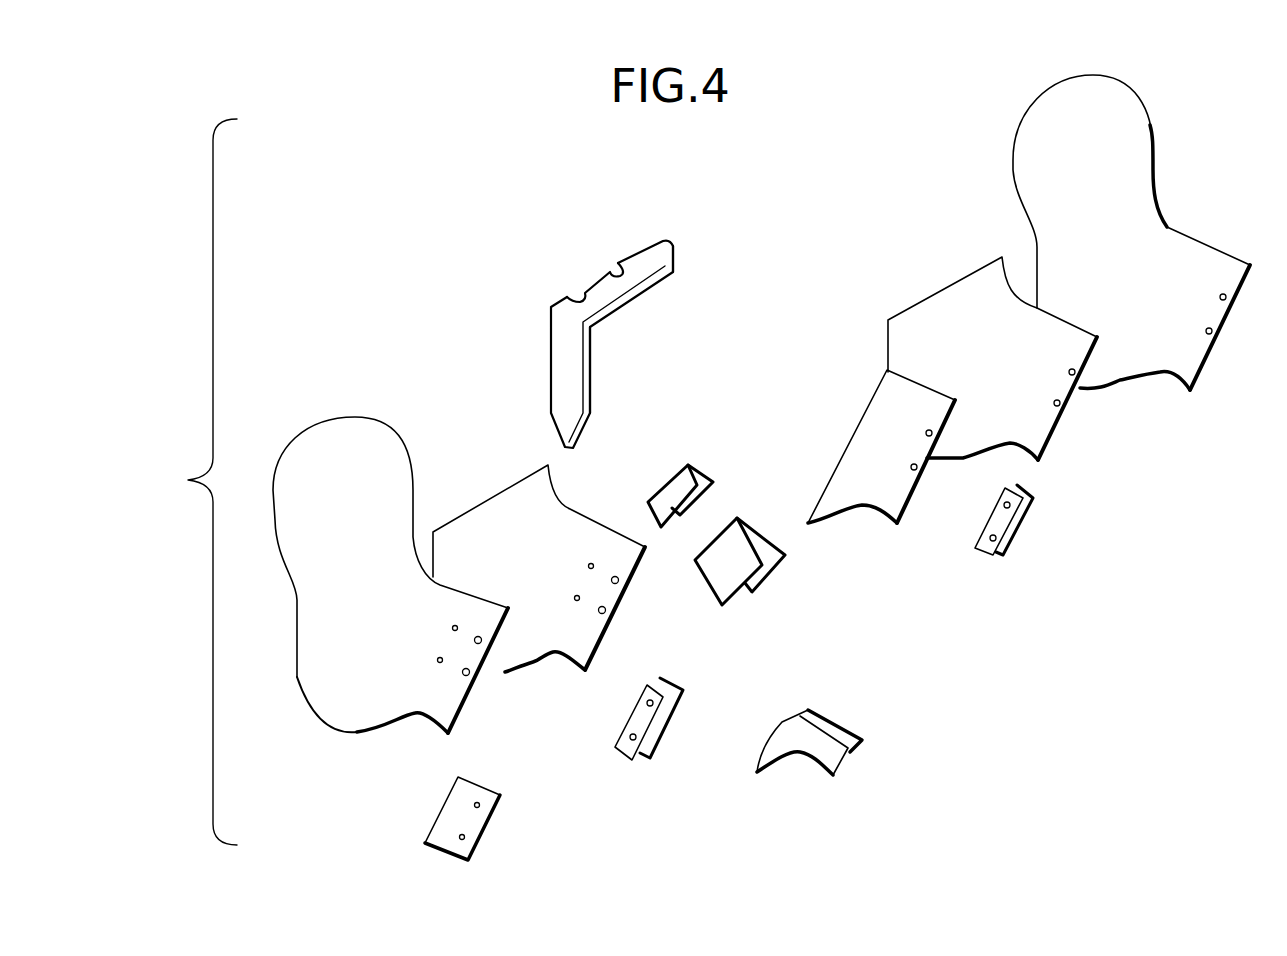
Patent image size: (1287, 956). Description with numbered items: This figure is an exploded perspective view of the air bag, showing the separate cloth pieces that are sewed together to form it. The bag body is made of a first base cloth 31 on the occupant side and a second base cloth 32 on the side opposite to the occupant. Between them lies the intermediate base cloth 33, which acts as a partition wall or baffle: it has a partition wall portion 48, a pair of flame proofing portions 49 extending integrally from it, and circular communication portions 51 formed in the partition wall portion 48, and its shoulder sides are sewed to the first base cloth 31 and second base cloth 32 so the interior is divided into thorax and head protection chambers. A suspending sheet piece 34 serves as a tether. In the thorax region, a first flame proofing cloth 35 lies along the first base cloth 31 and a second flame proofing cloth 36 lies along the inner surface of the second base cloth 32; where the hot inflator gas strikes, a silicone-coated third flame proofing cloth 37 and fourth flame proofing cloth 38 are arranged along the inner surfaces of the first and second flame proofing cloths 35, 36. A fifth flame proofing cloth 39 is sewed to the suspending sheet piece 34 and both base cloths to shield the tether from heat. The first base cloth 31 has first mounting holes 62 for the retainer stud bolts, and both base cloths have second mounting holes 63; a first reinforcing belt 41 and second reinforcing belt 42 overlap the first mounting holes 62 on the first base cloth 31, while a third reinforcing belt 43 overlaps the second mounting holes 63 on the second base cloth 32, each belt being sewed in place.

The first base cloth 31 is at (374, 430).
The second base cloth 32 is at (1040, 113).
The intermediate base cloth 33 is at (618, 318).
The suspending sheet piece 34 is at (672, 483).
The first flame proofing cloth 35 is at (484, 512).
The second flame proofing cloth 36 is at (950, 282).
The third flame proofing cloth 37 is at (800, 712).
The fourth flame proofing cloth 38 is at (850, 438).
The fifth flame proofing cloth 39 is at (715, 570).
The first reinforcing belt 41 is at (490, 823).
The second reinforcing belt 42 is at (640, 760).
The third reinforcing belt 43 is at (985, 560).
The partition wall portion 48 is at (668, 274).
The flame proofing portions 49 is at (590, 392).
The communication portions 51 is at (614, 265).
The first mounting holes 62 is at (440, 660).
The second mounting holes 63 is at (470, 675).